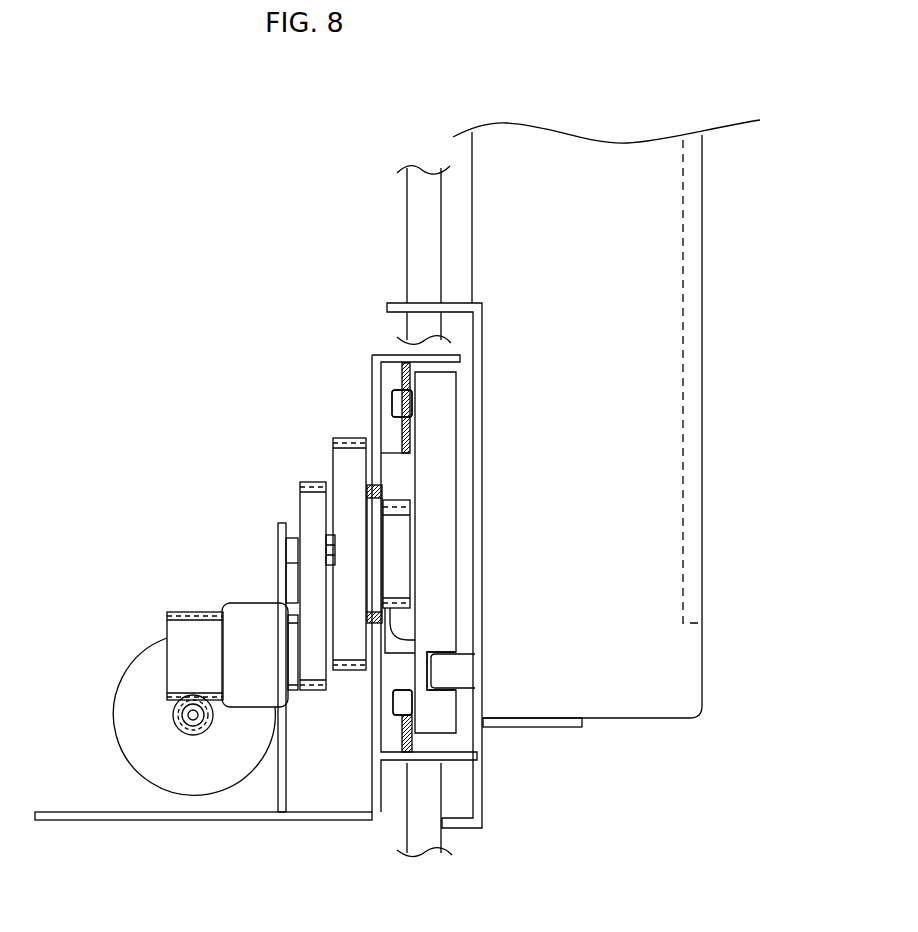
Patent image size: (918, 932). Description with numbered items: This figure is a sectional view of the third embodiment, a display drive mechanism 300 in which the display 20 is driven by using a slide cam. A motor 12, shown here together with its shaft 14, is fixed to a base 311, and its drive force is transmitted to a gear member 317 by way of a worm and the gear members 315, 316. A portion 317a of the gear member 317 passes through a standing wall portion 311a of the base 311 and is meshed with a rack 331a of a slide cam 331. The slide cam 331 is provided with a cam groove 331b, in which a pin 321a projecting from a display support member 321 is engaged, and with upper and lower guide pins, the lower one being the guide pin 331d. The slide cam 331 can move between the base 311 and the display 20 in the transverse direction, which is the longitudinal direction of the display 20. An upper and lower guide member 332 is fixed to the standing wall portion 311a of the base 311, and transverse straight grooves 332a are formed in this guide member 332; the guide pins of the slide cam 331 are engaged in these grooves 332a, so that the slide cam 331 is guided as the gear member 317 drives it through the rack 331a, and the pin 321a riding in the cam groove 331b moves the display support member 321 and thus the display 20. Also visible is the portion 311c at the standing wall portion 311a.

The display 20 is at (702, 268).
The motor 12 is at (127, 678).
The roll shaft 14 is at (193, 736).
The display drive mechanism 300 is at (183, 400).
The base 311 is at (184, 822).
The standing wall portion 311a is at (370, 366).
The hole of bracket 311c is at (392, 402).
The gear member 315 is at (246, 603).
The gear member 316 is at (306, 480).
The gear member 317 is at (333, 442).
The portion of the gear member 317a is at (403, 550).
The display support member 321 is at (482, 806).
The pin 321a is at (465, 662).
The slide cam 331 is at (450, 432).
The rack 331a is at (400, 627).
The cam groove 331b is at (450, 678).
The guide pin 331d is at (393, 707).
The guide member 332 is at (395, 456).
The transverse straight groove 332a is at (403, 401).